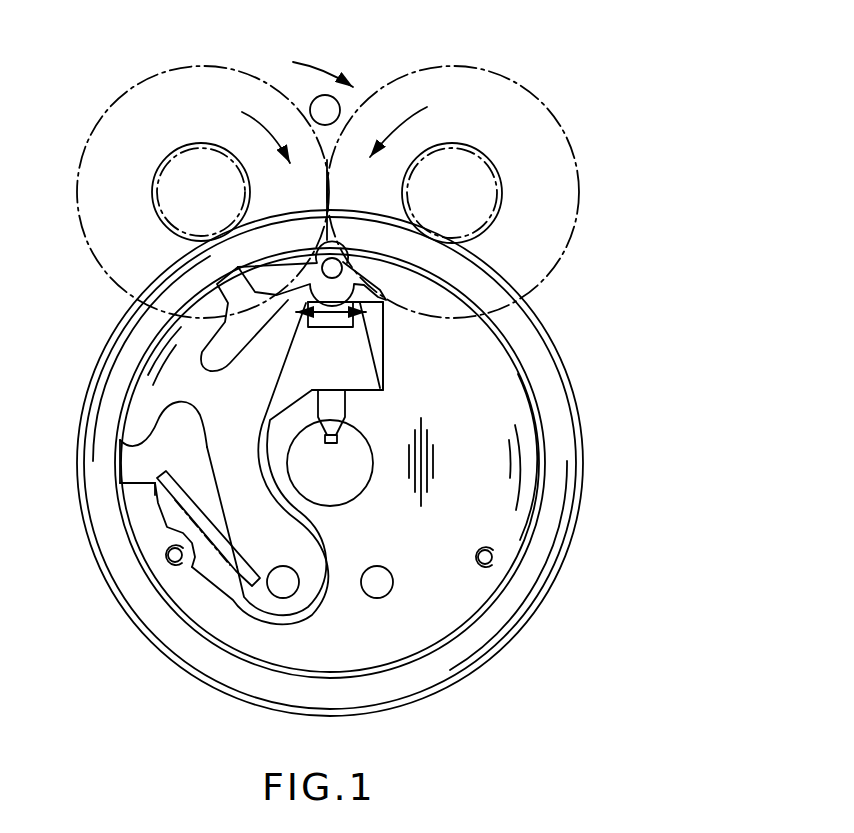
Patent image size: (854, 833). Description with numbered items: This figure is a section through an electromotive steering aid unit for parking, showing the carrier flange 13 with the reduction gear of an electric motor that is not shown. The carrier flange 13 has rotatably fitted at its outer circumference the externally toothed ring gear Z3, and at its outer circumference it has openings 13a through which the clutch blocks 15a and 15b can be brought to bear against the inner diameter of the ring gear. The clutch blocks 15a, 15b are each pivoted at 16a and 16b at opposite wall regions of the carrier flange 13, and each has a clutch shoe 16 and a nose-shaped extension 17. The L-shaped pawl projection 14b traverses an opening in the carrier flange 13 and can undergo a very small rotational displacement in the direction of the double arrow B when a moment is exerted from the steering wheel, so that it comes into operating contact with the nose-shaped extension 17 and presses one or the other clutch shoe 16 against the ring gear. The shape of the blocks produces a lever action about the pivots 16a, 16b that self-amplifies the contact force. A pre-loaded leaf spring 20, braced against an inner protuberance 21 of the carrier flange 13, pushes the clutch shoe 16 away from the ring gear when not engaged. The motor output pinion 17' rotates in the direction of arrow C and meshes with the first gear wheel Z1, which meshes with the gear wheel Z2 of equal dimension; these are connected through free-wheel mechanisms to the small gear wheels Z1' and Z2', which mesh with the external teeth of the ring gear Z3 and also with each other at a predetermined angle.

The carrier flange 13 is at (458, 582).
The openings 13a is at (125, 480).
The projection 14b is at (331, 318).
The clutch block 15a is at (148, 421).
The clutch block 15b is at (380, 325).
The clutch shoe 16 is at (157, 370).
The pivot 16a is at (285, 592).
The pivot 16b is at (383, 594).
The nose-shaped extension 17 is at (223, 306).
The pinion 17' is at (363, 136).
The leaf spring 20 is at (183, 517).
The inner protuberance 21 is at (155, 485).
The double arrow B is at (345, 314).
The arrow C is at (315, 60).
The first gear wheel Z1 is at (458, 184).
The small gear wheel Z1' is at (465, 185).
The gear wheel Z2 is at (197, 183).
The small gear wheel Z2' is at (182, 182).
The ring gear Z3 is at (465, 683).